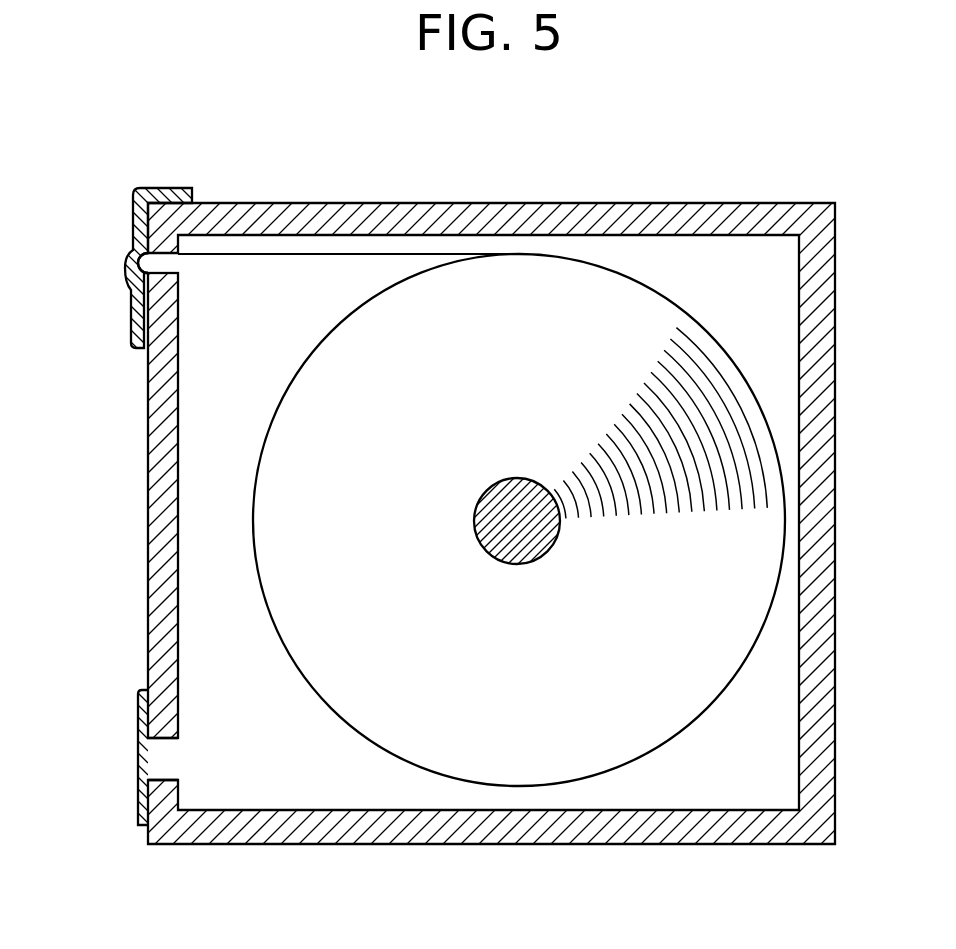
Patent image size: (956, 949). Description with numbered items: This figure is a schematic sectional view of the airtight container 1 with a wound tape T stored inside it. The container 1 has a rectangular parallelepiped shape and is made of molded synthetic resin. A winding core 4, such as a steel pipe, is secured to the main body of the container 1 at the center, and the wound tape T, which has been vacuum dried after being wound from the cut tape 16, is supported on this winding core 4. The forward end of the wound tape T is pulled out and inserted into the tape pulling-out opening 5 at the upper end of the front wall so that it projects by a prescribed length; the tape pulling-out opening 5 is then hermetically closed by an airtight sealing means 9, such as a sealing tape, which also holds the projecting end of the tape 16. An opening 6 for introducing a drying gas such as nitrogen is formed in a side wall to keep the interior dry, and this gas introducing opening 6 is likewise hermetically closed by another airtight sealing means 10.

The container 1 is at (598, 203).
The winding core 4 is at (493, 538).
The tape pulling-out opening 5 is at (170, 266).
The opening for introducing a drying gas 6 is at (174, 760).
The airtight sealing means 9 is at (132, 225).
The airtight sealing means 10 is at (138, 717).
The tape 16 is at (382, 253).
The wound tape T is at (626, 743).